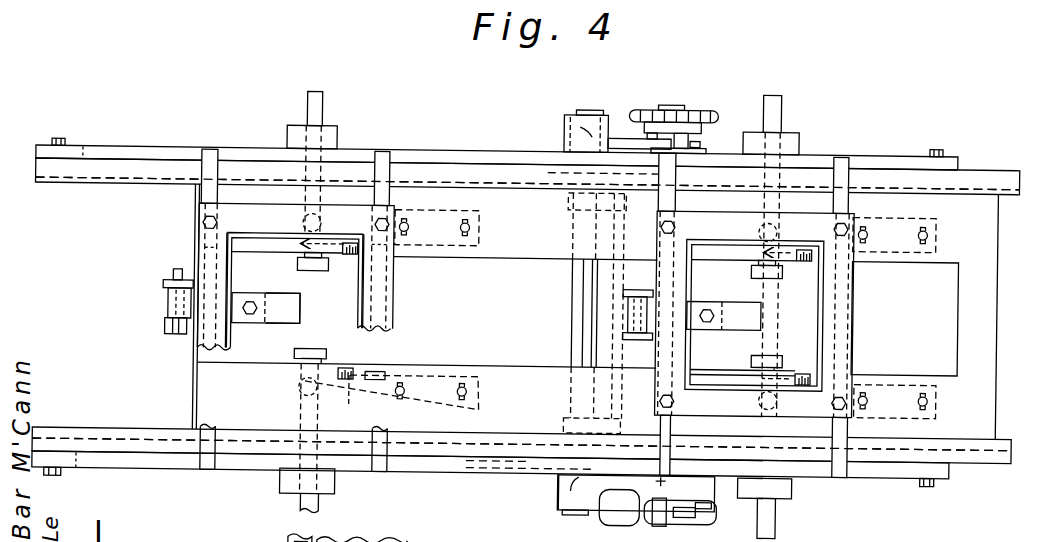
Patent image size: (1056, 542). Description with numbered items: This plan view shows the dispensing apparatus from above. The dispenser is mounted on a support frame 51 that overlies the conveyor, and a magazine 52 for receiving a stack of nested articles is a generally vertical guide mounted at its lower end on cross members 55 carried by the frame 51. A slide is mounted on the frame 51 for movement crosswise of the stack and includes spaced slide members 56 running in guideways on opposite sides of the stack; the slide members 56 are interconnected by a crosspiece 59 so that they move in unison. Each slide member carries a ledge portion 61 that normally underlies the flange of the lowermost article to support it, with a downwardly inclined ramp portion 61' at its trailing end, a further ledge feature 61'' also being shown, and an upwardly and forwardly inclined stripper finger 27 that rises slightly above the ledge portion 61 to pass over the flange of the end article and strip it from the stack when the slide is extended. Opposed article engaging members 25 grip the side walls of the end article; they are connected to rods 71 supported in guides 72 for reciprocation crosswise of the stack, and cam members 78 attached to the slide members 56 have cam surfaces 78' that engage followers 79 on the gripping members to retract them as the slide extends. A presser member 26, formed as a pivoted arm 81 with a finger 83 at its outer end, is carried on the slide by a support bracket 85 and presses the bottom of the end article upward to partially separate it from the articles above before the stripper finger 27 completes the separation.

The support frame 51 is at (162, 151).
The cross members 55 is at (385, 172).
The magazine 52 is at (374, 285).
The ledge portions 61 is at (525, 312).
The downwardly inclined ramp portion 61' is at (750, 358).
The lower left guide rail 61'' is at (426, 361).
The slide members 56 is at (497, 380).
The presser member 26 is at (309, 313).
The arm 81 is at (238, 314).
The finger 83 is at (283, 314).
The support bracket 85 is at (165, 328).
The article engaging members 25 is at (335, 352).
The stripper finger 27 is at (373, 371).
The followers 79 is at (300, 389).
The cam members 78 is at (619, 330).
The cam surfaces 78' is at (610, 317).
The crosspiece 59 is at (997, 292).
The guides 72 is at (281, 480).
The rods 71 is at (302, 503).